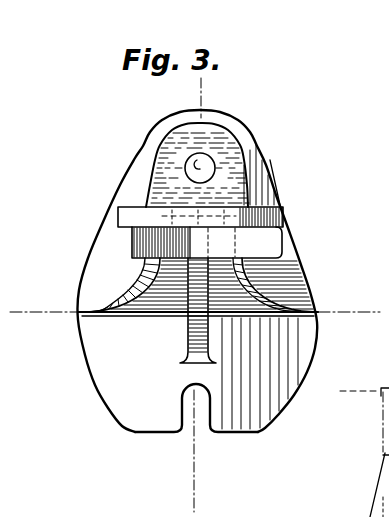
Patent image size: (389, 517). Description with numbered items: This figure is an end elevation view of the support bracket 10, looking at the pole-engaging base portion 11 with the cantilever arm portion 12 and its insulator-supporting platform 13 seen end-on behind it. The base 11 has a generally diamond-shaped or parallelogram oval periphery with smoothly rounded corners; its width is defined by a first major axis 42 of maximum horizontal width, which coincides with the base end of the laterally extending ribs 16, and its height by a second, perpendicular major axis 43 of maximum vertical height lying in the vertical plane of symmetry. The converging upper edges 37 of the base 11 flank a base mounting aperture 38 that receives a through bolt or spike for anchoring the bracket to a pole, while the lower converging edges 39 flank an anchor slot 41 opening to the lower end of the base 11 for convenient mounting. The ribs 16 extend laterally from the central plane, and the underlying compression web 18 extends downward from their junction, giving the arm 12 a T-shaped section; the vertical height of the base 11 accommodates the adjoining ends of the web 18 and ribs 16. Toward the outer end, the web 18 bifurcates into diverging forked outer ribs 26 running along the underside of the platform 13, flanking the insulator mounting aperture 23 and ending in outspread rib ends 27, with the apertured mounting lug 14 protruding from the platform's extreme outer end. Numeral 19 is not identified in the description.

The support bracket 10 is at (295, 157).
The pole-engaging base portion 11 is at (125, 160).
The cantilever arm portion 12 is at (138, 279).
The insulator-supporting platform 13 is at (130, 200).
The mounting lug 14 is at (156, 214).
The ribs 16 is at (258, 281).
The compression web 18 is at (184, 344).
The adjacent member 19 is at (375, 484).
The insulator mounting aperture 23 is at (277, 184).
The forked outer ribs 26 is at (150, 239).
The rib ends 27 is at (130, 228).
The converging upper edges 37 is at (142, 150).
The base mounting aperture 38 is at (196, 160).
The lower converging edges 39 is at (92, 370).
The anchor slot 41 is at (185, 433).
The first major axis 42 is at (28, 315).
The second major axis 43 is at (208, 95).